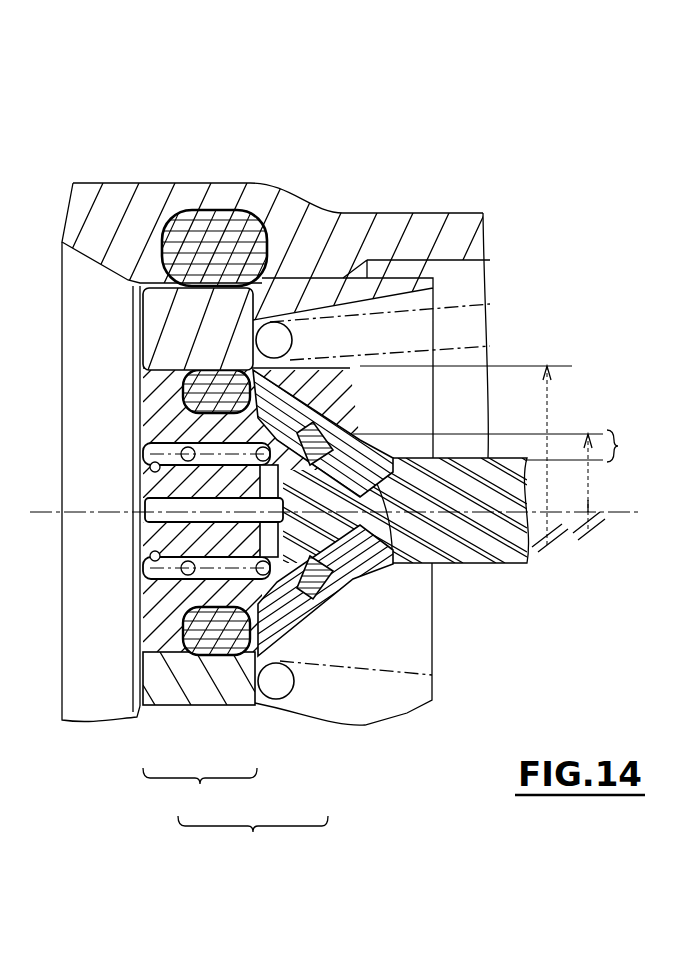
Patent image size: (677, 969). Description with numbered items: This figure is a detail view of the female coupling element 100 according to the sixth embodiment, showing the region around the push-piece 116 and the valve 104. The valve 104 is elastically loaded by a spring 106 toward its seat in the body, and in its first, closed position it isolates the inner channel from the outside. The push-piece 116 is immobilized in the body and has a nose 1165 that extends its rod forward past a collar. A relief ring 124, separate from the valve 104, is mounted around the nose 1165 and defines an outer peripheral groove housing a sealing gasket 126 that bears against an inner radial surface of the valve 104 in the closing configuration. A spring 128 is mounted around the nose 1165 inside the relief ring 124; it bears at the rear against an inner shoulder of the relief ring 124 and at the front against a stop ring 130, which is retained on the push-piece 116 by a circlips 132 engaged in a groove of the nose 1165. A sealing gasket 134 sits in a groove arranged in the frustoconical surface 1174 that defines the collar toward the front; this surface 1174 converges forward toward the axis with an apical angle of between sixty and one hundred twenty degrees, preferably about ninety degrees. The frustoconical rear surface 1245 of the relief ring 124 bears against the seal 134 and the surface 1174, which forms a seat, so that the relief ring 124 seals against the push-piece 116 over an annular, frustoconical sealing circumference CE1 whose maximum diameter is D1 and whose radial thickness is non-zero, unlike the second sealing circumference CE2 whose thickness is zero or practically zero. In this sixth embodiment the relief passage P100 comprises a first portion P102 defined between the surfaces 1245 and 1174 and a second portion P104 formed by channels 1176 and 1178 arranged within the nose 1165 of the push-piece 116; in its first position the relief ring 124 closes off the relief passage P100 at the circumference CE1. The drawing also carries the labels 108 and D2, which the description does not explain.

The female coupling element 100 is at (322, 130).
The valve 104 is at (153, 338).
The spring 106 is at (394, 330).
The chamber 108 is at (118, 638).
The push-piece 116 is at (510, 545).
The relief ring 124 is at (272, 372).
The sealing gasket 126 is at (218, 250).
The spring 128 is at (158, 416).
The stop ring 130 is at (150, 455).
The circlips 132 is at (165, 478).
The sealing gasket 134 is at (395, 617).
The nose 1165 is at (163, 538).
The frustoconical surface 1174 is at (320, 404).
The channel 1176 is at (276, 505).
The channel 1178 is at (272, 470).
The frustoconical rear surface 1245 is at (387, 567).
The relief passage P100 is at (253, 841).
The first portion P102 is at (353, 579).
The second portion P104 is at (200, 791).
The first sealing circumference CE1 is at (506, 446).
The second sealing circumference CE2 is at (488, 365).
The maximum diameter D1 is at (589, 487).
The second diameter D2 is at (550, 459).